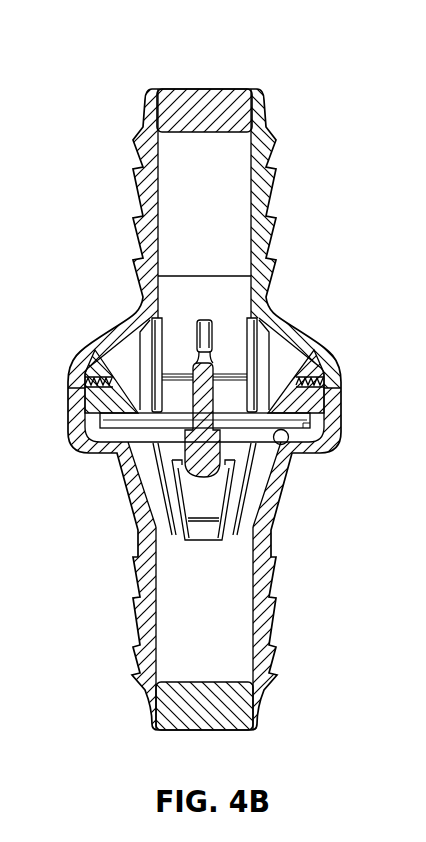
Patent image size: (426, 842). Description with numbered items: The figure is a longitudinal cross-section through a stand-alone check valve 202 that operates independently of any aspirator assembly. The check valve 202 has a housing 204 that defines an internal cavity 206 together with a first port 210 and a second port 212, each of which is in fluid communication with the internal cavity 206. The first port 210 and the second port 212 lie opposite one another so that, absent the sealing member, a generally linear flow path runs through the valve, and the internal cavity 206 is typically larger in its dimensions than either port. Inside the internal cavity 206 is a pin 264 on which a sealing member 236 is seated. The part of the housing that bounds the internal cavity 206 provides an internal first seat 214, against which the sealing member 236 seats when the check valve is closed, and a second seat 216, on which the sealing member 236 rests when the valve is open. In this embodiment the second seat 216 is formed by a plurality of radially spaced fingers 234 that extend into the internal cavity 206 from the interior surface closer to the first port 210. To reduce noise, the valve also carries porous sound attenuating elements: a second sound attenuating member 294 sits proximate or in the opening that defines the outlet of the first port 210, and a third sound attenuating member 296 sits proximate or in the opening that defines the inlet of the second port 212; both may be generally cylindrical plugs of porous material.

The check valve 202 is at (213, 395).
The housing 204 is at (244, 228).
The internal cavity 206 is at (244, 575).
The first port 210 is at (254, 159).
The second port 212 is at (252, 650).
The first seat 214 is at (270, 443).
The second seat 216 is at (115, 424).
The fingers 234 is at (113, 357).
The sealing member 236 is at (289, 441).
The pin 264 is at (207, 378).
The second sound attenuating member 294 is at (214, 94).
The third sound attenuating member 296 is at (246, 722).